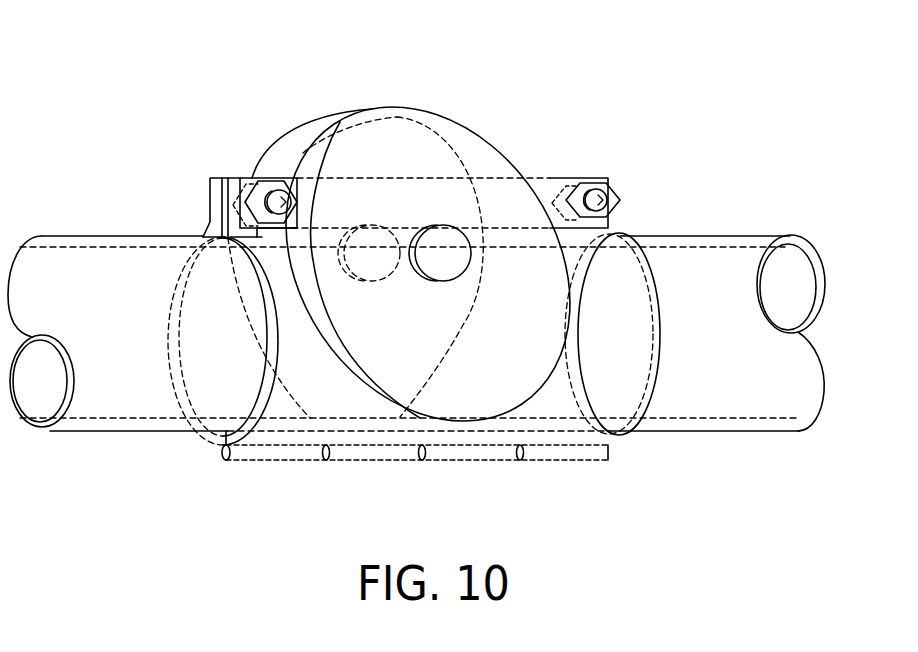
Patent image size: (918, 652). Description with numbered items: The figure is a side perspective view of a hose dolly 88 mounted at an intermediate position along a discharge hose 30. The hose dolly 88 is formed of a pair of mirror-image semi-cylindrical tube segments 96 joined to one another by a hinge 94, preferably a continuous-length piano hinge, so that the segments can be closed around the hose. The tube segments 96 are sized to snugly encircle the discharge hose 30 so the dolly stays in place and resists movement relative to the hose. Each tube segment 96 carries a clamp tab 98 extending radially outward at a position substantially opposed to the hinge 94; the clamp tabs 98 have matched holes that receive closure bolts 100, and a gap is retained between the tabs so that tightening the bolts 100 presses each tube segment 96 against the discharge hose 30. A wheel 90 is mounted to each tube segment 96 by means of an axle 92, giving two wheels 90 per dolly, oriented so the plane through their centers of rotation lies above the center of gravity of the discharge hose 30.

The discharge hose 30 is at (776, 400).
The hose dolly 88 is at (618, 162).
The wheel 90 is at (483, 147).
The axle 92 is at (453, 258).
The hinge 94 is at (448, 452).
The semi-cylindrical tube segment 96 is at (621, 370).
The clamp tab 98 is at (213, 195).
The closure bolt 100 is at (623, 203).